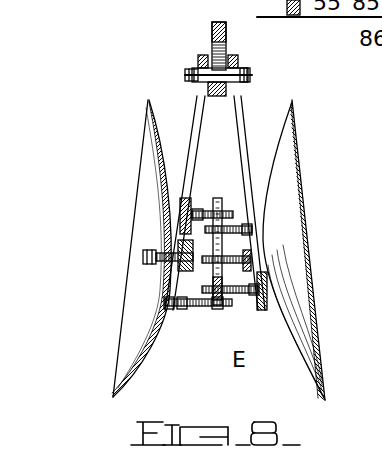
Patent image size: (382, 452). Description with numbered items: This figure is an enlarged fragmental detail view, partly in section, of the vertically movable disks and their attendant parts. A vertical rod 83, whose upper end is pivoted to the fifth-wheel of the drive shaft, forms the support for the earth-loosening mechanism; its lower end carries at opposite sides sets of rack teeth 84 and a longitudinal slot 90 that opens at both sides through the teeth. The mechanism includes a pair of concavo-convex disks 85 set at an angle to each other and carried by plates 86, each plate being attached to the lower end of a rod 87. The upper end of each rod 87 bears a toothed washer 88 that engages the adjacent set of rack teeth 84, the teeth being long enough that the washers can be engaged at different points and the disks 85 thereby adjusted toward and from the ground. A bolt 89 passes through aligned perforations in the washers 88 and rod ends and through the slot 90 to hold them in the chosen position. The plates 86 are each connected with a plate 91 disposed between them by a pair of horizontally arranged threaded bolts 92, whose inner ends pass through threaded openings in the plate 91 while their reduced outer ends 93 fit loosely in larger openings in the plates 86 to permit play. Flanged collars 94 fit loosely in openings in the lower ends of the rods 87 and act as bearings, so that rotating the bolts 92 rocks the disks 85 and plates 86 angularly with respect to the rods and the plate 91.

The vertical rod 83 is at (213, 23).
The rack teeth 84 is at (226, 47).
The concavo-convex disks 85 is at (313, 312).
The plates 86 is at (183, 198).
The rod 87 is at (240, 139).
The toothed washer 88 is at (244, 66).
The bolt 89 is at (188, 76).
The longitudinal slot 90 is at (213, 40).
The plate 91 is at (214, 309).
The threaded bolts 92 is at (200, 308).
The reduced outer ends 93 is at (172, 272).
The flanged collars 94 is at (175, 248).